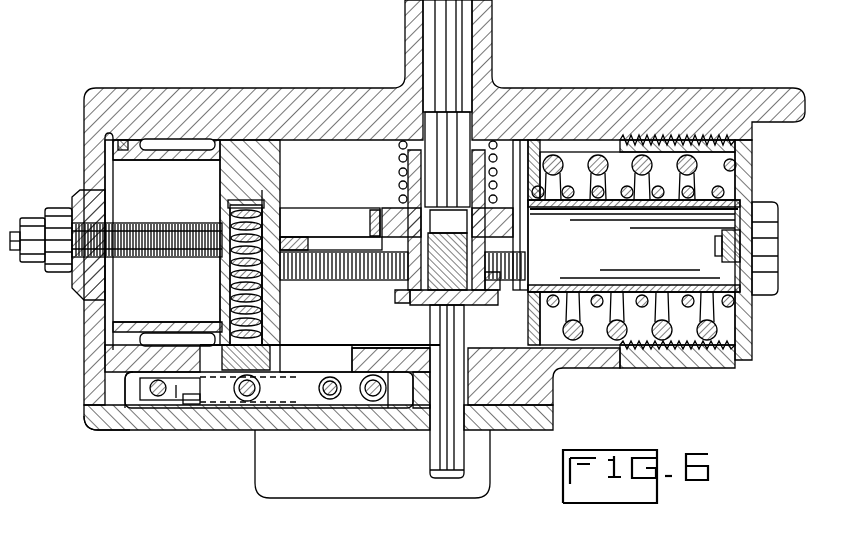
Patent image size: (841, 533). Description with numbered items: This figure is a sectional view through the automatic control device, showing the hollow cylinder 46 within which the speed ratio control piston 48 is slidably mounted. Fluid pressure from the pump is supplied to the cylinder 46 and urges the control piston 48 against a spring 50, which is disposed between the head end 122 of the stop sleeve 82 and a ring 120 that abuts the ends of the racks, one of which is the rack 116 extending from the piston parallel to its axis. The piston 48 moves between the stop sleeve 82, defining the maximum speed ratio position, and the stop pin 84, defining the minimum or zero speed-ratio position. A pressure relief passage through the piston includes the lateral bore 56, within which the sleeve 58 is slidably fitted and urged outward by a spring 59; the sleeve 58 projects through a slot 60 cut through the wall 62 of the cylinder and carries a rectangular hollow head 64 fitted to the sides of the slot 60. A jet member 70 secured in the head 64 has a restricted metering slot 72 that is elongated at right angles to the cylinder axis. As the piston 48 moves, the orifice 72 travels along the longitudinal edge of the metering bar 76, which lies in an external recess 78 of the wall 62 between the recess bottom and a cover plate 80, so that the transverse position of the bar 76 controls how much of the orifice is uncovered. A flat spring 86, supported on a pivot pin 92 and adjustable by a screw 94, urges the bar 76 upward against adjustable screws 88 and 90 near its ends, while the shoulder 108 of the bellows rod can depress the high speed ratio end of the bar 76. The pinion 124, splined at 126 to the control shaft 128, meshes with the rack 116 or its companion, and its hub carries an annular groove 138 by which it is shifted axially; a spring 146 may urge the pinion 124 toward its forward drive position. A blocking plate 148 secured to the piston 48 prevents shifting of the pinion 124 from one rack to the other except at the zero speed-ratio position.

The hollow cylinder 46 is at (108, 158).
The speed ratio control piston 48 is at (165, 330).
The spring 50 is at (600, 160).
The lateral bore 56 is at (272, 300).
The sleeve 58 is at (275, 308).
The spring 59 is at (232, 294).
The slot 60 is at (330, 345).
The wall 62 is at (410, 346).
The rectangular hollow head 64 is at (288, 345).
The jet member 70 is at (238, 402).
The metering slot 72 is at (269, 390).
The metering bar 76 is at (368, 402).
The recess 78 is at (130, 402).
The cover plate 80 is at (105, 420).
The stop sleeve 82 is at (670, 352).
The stop pin 84 is at (172, 223).
The flat spring 86 is at (176, 397).
The adjustable screw 88 is at (248, 402).
The adjustable screw 90 is at (330, 400).
The pivot pin 92 is at (192, 402).
The screw 94 is at (158, 394).
The shoulder 108 is at (385, 402).
The rack 116 is at (362, 268).
The ring 120 is at (553, 128).
The head end 122 is at (745, 166).
The pinion 124 is at (392, 210).
The spline 126 is at (470, 248).
The control shaft 128 is at (463, 45).
The annular groove 138 is at (500, 298).
The spring 146 is at (399, 158).
The blocking plate 148 is at (293, 240).